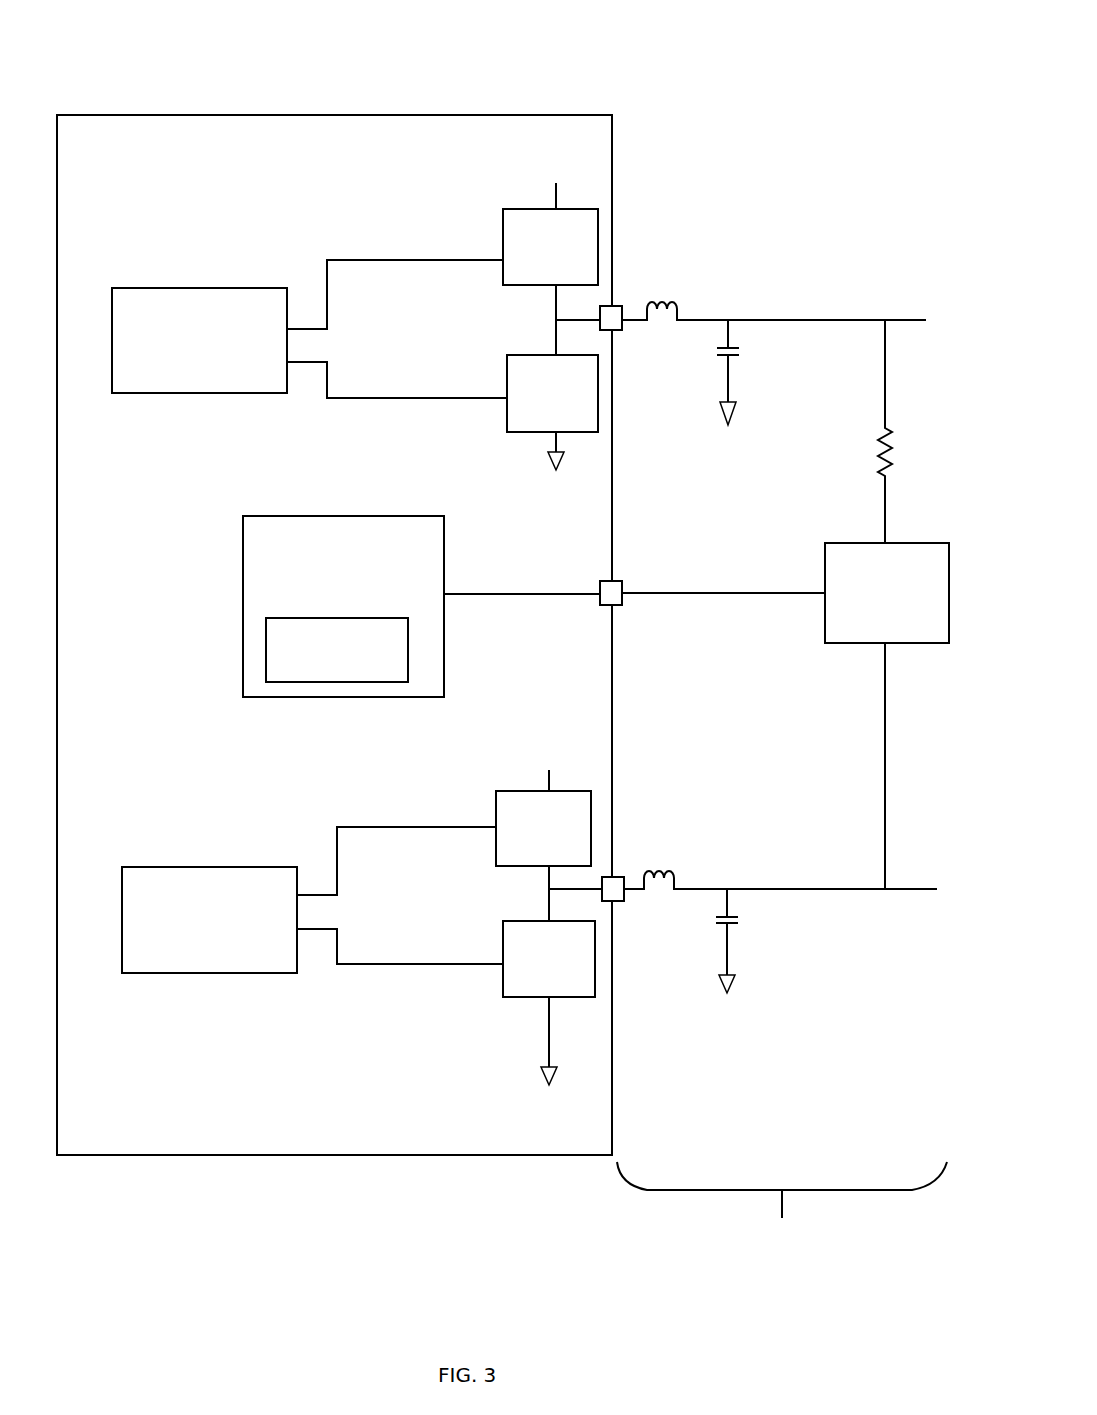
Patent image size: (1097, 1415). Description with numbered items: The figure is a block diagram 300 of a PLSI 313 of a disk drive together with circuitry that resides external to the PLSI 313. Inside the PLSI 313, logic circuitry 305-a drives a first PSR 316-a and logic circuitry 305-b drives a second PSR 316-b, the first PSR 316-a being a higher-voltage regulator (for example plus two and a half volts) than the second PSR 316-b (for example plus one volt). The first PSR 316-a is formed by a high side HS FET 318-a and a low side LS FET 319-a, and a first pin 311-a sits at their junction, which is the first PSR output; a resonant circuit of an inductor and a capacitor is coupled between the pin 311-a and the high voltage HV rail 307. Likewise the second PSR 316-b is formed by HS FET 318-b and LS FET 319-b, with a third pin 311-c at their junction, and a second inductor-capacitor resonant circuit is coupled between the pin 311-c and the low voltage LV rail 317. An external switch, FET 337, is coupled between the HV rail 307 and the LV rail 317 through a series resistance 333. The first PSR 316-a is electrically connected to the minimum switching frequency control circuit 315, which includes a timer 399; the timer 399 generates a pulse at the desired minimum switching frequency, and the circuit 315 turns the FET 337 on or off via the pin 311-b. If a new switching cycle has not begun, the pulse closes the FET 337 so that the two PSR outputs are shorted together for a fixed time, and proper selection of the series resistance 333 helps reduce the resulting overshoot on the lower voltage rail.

The block diagram 300 is at (808, 64).
The power large scale integrated circuit (PLSI) 313 is at (176, 153).
The first PSR 316-a is at (454, 236).
The second PSR 316-b is at (443, 794).
The logic circuitry 305-a is at (171, 358).
The logic circuitry 305-b is at (181, 937).
The high side FET (HS FET) 318-a is at (521, 271).
The high side FET (HS FET) 318-b is at (514, 853).
The low side FET (LS FET) 319-a is at (523, 417).
The low side FET (LS FET) 319-b is at (520, 983).
The first pin 311-a is at (621, 306).
The pin 311-b is at (623, 604).
The third pin 311-c is at (622, 900).
The high voltage (HV) rail 307 is at (835, 319).
The low voltage (LV) rail 317 is at (855, 895).
The series resistance (Rs) 333 is at (844, 431).
The FET 337 is at (928, 603).
The minimum switching frequency control circuit 315 is at (324, 608).
The timer 399 is at (388, 660).